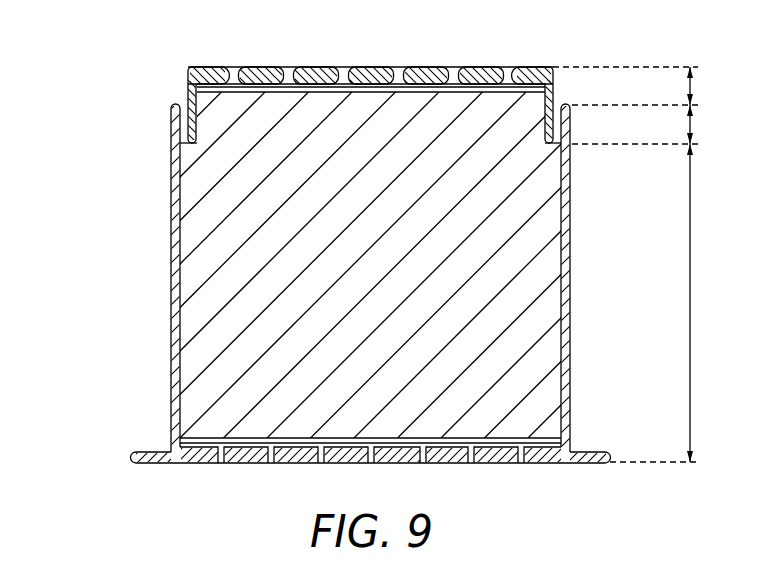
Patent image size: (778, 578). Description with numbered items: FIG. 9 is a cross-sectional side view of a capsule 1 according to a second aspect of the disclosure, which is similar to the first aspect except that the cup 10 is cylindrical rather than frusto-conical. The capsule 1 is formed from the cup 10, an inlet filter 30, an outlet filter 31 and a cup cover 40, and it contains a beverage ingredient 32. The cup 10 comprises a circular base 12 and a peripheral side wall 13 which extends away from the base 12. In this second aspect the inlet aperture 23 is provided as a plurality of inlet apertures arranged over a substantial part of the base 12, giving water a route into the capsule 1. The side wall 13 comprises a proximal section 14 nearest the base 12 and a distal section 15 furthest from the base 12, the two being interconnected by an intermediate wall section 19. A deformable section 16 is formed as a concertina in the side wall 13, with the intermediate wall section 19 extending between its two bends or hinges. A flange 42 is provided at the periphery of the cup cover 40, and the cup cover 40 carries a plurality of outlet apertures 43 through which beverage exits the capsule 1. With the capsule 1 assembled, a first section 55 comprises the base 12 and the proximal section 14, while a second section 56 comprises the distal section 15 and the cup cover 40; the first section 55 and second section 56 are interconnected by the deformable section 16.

The capsule 1 is at (96, 76).
The cup 10 is at (141, 238).
The base 12 is at (481, 70).
The peripheral side wall 13 is at (141, 324).
The proximal section 14 is at (544, 96).
The distal section 15 is at (570, 282).
The deformable section 16 is at (649, 124).
The intermediate wall section 19 is at (547, 136).
The inlet aperture 23 is at (338, 72).
The inlet filter 30 is at (216, 91).
The outlet filter 31 is at (390, 440).
The beverage ingredient 32 is at (515, 342).
The cup cover 40 is at (181, 478).
The flange 42 is at (608, 460).
The outlet apertures 43 is at (470, 467).
The first section 55 is at (640, 86).
The second section 56 is at (667, 303).